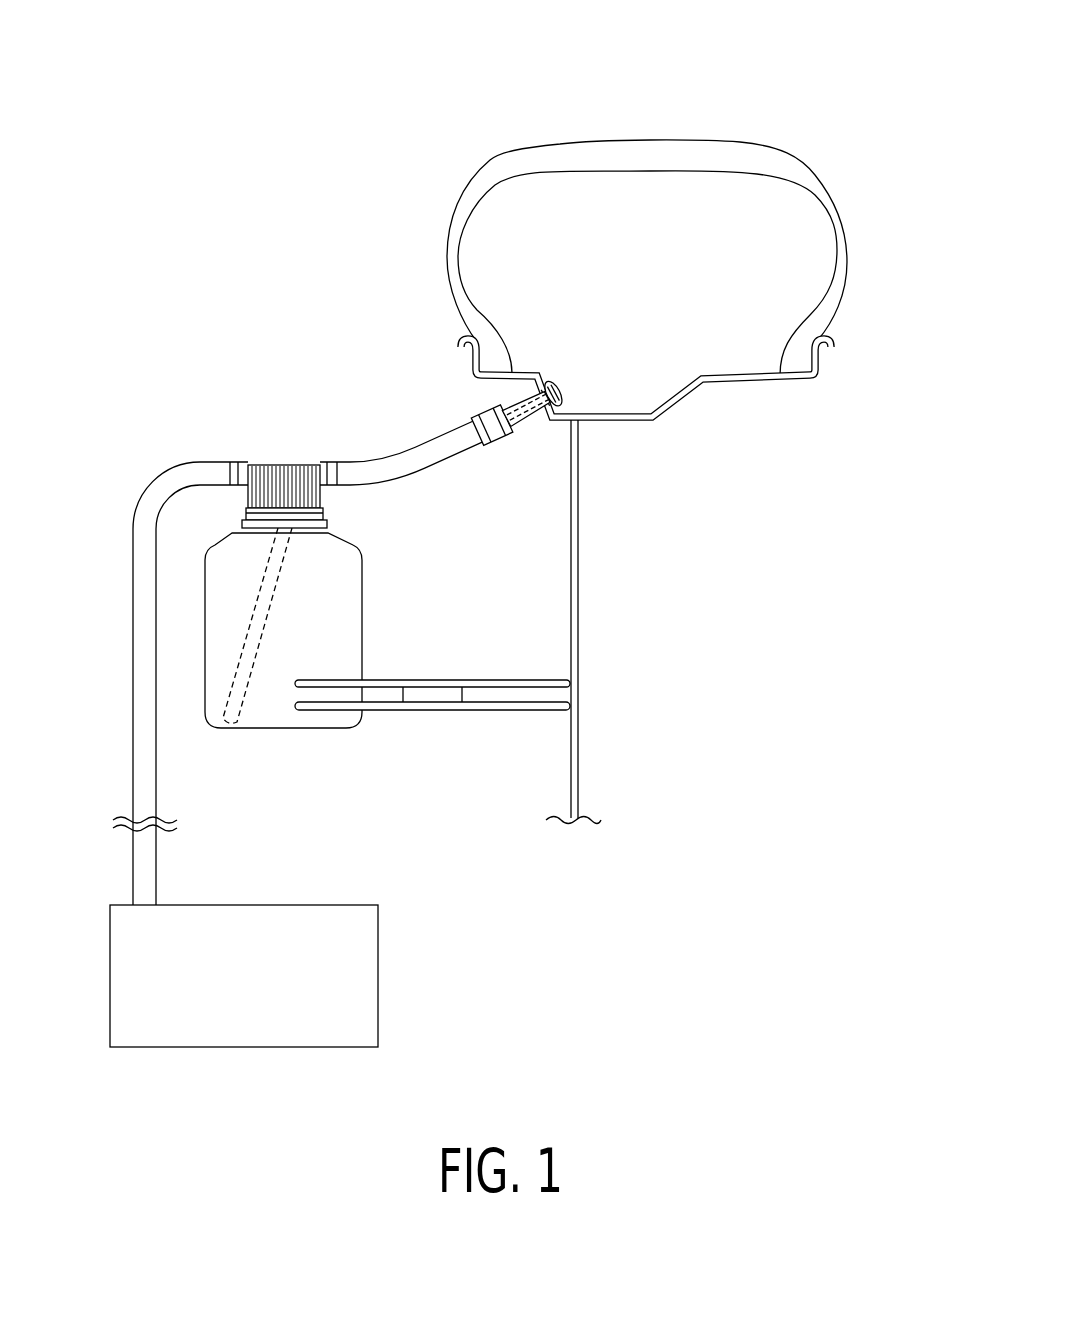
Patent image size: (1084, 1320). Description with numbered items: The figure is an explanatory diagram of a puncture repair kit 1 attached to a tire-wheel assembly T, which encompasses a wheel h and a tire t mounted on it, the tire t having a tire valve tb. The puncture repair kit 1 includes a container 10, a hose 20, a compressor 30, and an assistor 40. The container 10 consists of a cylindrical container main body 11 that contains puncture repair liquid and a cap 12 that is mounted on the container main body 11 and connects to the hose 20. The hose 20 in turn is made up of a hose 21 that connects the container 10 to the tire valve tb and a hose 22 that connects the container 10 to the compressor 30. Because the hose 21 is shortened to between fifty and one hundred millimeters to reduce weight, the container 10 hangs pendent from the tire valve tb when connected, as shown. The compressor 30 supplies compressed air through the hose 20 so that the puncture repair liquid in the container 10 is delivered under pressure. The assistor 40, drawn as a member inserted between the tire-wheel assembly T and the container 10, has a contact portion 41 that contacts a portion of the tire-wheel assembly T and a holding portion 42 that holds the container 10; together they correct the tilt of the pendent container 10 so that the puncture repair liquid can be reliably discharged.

The tire-wheel assembly T is at (668, 262).
The tire t is at (848, 262).
The tire valve tb is at (532, 410).
The wheel h is at (579, 548).
The puncture repair kit 1 is at (330, 699).
The container 10 is at (329, 596).
The container main body 11 is at (350, 638).
The cap 12 is at (313, 501).
The hose 20 is at (332, 647).
The hose 21 is at (432, 456).
The hose 22 is at (148, 787).
The compressor 30 is at (378, 1003).
The assistor 40 is at (432, 710).
The contact portion 41 is at (567, 680).
The holding portion 42 is at (333, 712).